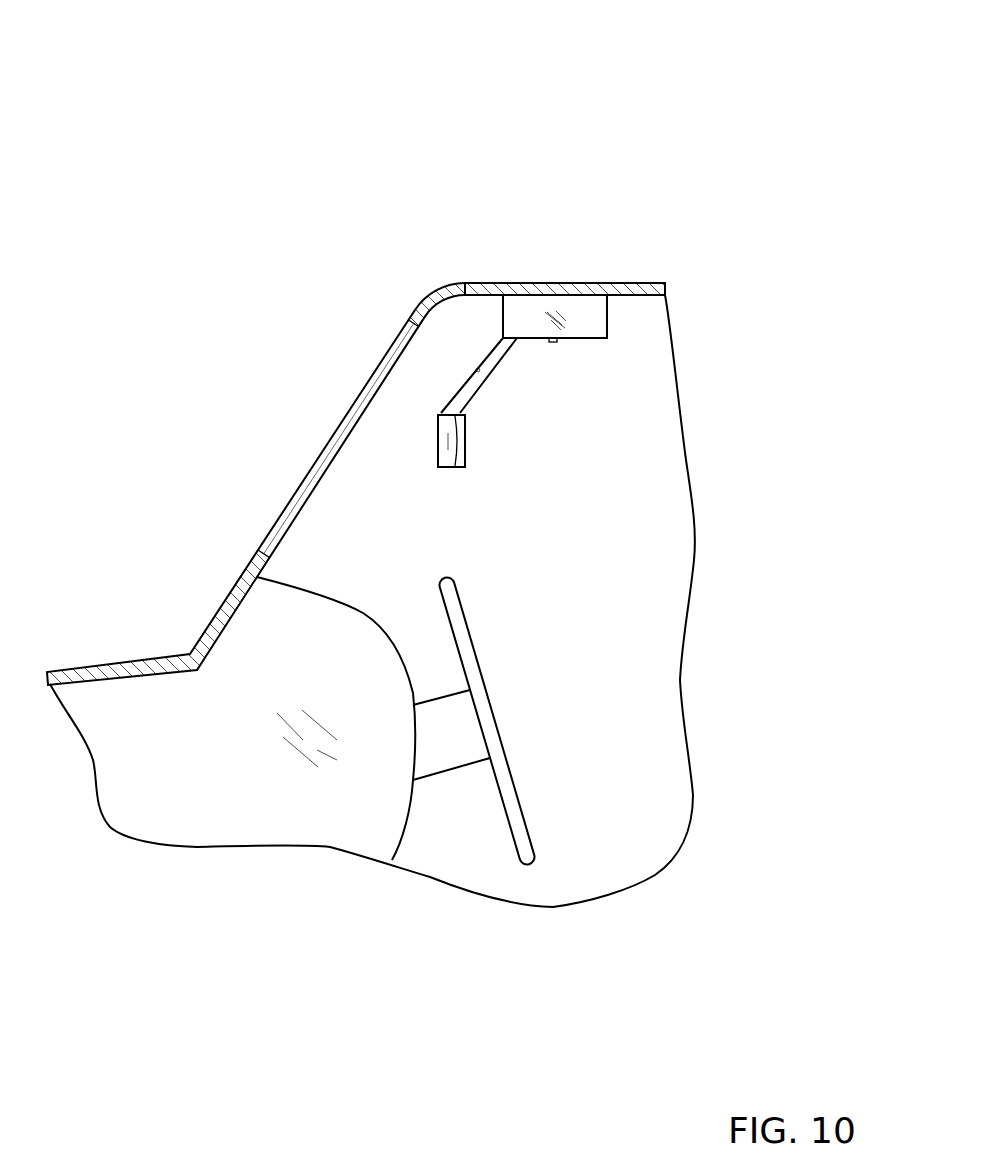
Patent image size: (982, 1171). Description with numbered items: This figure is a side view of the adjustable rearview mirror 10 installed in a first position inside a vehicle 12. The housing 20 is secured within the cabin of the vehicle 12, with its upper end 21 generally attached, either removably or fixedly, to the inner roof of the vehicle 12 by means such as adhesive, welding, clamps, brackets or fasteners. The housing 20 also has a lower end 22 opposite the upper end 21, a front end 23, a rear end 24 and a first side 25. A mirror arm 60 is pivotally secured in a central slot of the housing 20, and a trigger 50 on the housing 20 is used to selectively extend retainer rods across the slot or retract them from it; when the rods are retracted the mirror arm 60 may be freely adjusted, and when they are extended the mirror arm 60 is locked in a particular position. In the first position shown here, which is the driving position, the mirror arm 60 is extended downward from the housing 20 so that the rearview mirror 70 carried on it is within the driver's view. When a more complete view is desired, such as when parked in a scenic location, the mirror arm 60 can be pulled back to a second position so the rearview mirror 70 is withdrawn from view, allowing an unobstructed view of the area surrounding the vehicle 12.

The adjustable rearview mirror 10 is at (692, 122).
The vehicle 12 is at (218, 610).
The housing 20 is at (607, 305).
The upper end 21 is at (585, 293).
The lower end 22 is at (588, 338).
The front end 23 is at (503, 317).
The rear end 24 is at (607, 318).
The first side 25 is at (517, 317).
The trigger 50 is at (555, 343).
The mirror arm 60 is at (458, 393).
The rearview mirror 70 is at (465, 448).